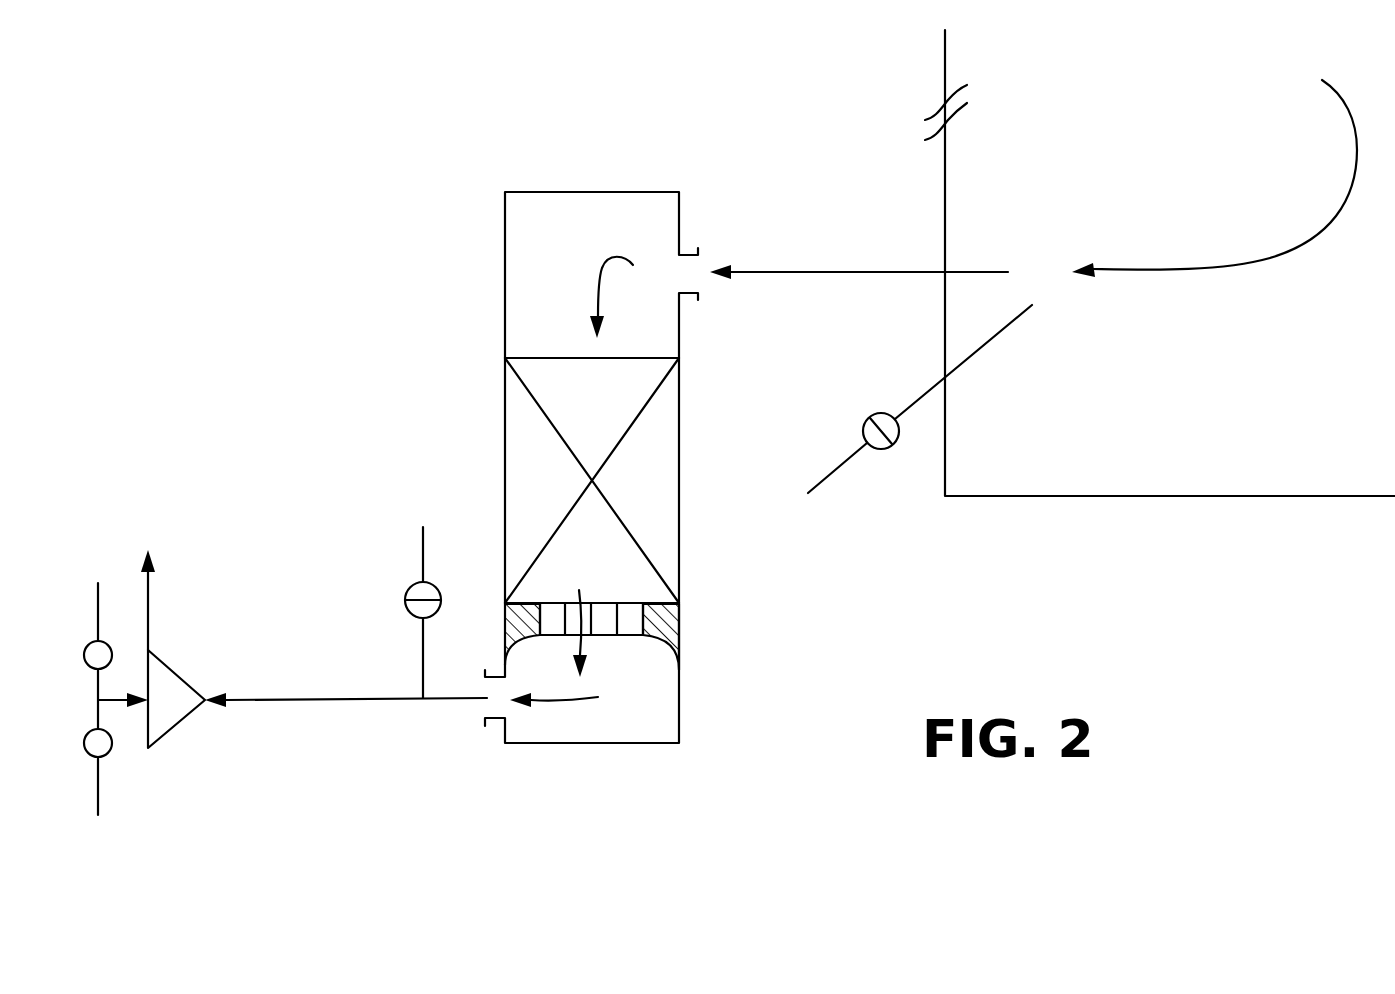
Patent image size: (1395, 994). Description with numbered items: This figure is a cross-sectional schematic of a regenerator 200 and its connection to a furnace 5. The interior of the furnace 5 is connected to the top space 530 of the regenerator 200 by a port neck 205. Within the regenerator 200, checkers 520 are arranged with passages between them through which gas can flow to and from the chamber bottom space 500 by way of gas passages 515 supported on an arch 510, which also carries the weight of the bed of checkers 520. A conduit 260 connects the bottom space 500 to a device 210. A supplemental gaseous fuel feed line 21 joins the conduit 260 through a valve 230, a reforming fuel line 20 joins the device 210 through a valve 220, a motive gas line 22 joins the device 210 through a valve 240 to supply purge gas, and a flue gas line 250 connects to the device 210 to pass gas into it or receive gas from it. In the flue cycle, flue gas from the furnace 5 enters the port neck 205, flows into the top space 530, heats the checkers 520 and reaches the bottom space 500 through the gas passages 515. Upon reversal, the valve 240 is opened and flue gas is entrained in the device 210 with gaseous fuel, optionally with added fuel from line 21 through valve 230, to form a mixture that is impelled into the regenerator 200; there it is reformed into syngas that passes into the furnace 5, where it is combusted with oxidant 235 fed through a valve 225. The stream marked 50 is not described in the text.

The regenerator 200 is at (551, 192).
The top space 530 is at (562, 242).
The checkers 520 is at (667, 497).
The gas passages 515 is at (643, 596).
The arch 510 is at (665, 628).
The chamber bottom space 500 is at (613, 736).
The port neck 205 is at (880, 273).
The exhaust stream 50 is at (1230, 293).
The furnace 5 is at (1283, 497).
The valve 225 is at (883, 449).
The oxidant 235 is at (822, 484).
The supplemental gaseous fuel feed line 21 is at (422, 540).
The valve 230 is at (406, 602).
The conduit 260 is at (463, 720).
The device 210 is at (200, 655).
The flue gas line 250 is at (151, 598).
The motive gas line 22 is at (96, 599).
The valve 240 is at (92, 685).
The valve 220 is at (74, 743).
The reforming fuel line 20 is at (96, 804).